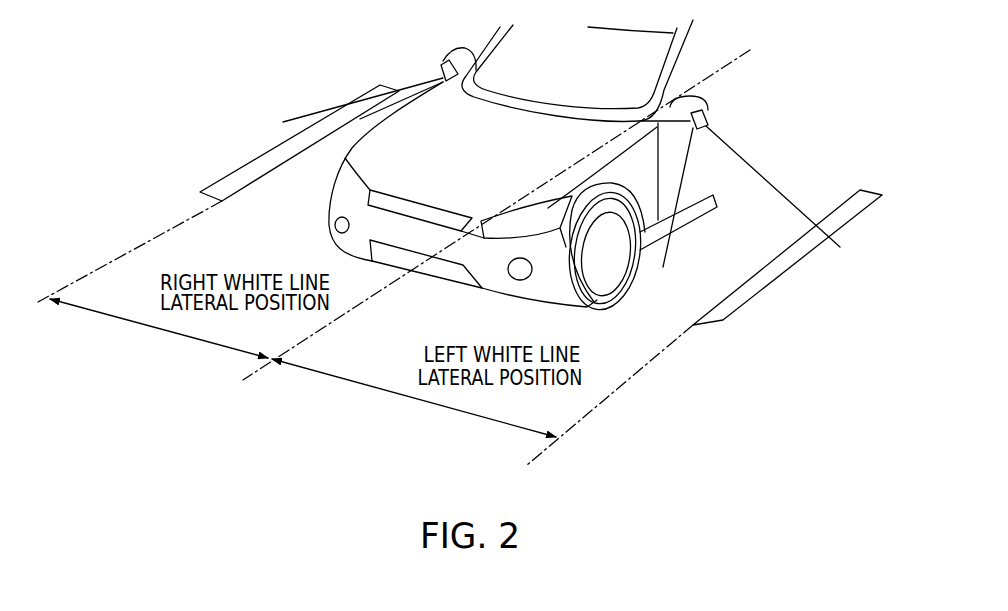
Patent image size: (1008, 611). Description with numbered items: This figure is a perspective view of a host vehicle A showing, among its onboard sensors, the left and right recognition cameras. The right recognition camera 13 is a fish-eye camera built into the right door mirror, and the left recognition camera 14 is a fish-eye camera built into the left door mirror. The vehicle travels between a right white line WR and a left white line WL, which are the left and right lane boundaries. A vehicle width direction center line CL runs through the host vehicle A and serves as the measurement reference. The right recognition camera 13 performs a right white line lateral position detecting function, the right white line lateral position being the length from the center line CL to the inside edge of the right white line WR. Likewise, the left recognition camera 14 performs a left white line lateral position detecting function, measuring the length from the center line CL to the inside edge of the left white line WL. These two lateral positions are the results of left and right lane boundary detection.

The right recognition camera 13 is at (435, 72).
The left recognition camera 14 is at (714, 121).
The host vehicle A is at (572, 76).
The right white line WR is at (269, 158).
The left white line WL is at (718, 321).
The vehicle width direction center line CL is at (377, 301).